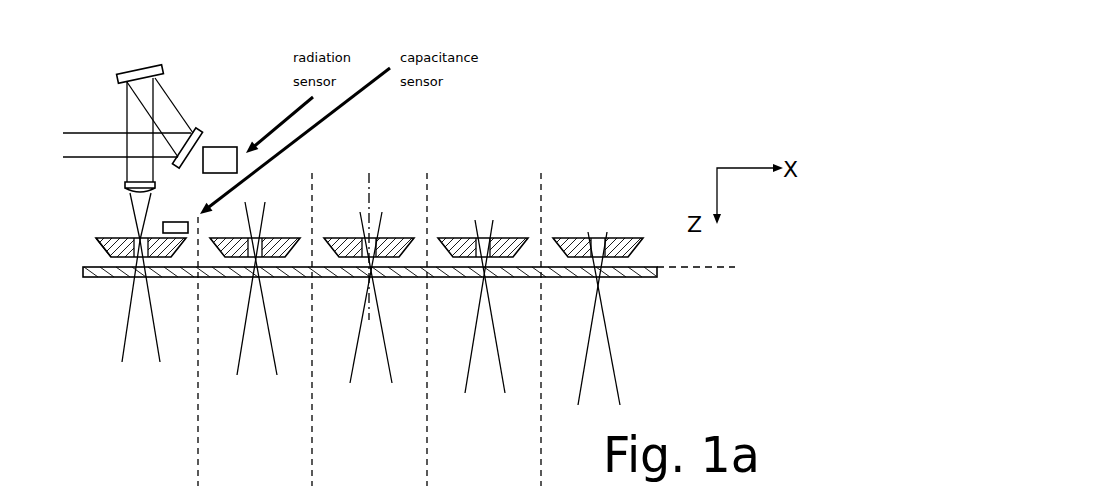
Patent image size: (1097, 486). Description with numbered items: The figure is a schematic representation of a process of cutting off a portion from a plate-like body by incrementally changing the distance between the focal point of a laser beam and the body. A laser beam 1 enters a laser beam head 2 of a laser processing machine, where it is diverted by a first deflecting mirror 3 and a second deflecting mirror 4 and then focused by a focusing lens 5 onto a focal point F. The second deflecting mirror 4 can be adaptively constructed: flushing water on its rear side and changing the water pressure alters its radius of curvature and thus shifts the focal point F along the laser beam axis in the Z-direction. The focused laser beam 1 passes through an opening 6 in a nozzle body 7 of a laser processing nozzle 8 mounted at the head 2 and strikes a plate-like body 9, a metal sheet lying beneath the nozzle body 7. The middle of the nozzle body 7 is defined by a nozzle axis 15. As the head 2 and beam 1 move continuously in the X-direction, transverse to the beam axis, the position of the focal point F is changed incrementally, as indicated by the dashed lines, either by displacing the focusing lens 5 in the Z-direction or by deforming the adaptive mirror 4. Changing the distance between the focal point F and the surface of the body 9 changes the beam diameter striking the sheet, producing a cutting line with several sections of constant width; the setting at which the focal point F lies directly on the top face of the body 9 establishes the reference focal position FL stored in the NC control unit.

The laser beam 1 is at (82, 132).
The laser beam head 2 is at (186, 96).
The first deflecting mirror 3 is at (200, 131).
The second deflecting mirror 4 is at (140, 68).
The focusing lens 5 is at (125, 185).
The opening 6 is at (142, 240).
The nozzle body 7 is at (104, 248).
The laser processing nozzle 8 is at (86, 242).
The plate-like body 9 is at (641, 277).
The nozzle axis 15 is at (368, 188).
The focal point F is at (138, 240).
The reference focal position FL is at (711, 269).